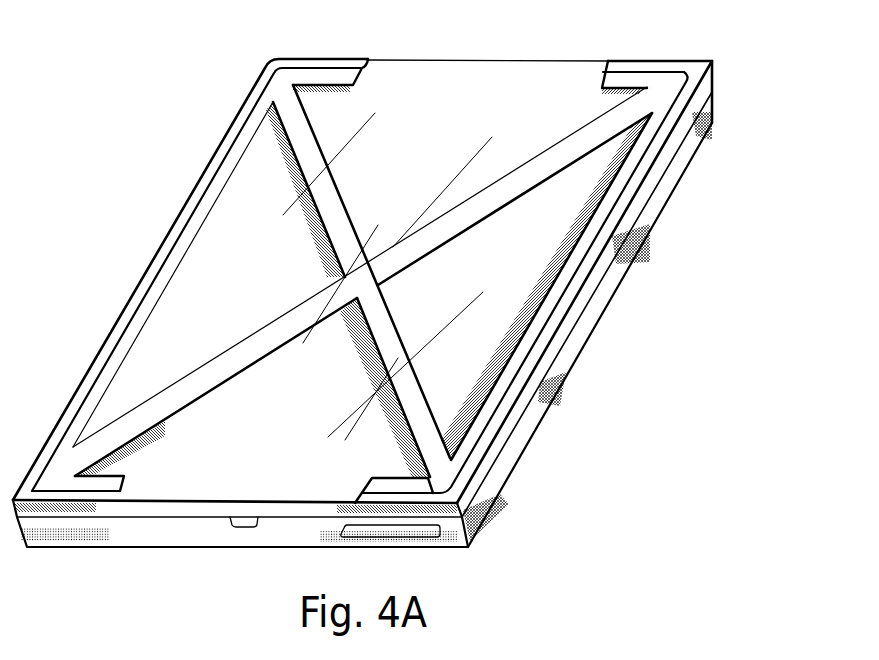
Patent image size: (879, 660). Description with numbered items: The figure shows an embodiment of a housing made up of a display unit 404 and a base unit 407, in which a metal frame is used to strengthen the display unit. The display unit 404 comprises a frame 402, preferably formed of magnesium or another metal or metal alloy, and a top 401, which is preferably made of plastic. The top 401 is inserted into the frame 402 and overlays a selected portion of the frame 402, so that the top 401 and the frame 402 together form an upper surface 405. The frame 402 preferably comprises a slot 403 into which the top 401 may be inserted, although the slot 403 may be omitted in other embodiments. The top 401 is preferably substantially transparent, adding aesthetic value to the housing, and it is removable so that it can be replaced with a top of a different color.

The top 401 is at (561, 60).
The frame 402 is at (212, 158).
The slot 403 is at (372, 62).
The display unit 404 is at (710, 78).
The upper surface 405 is at (267, 257).
The base unit 407 is at (520, 450).